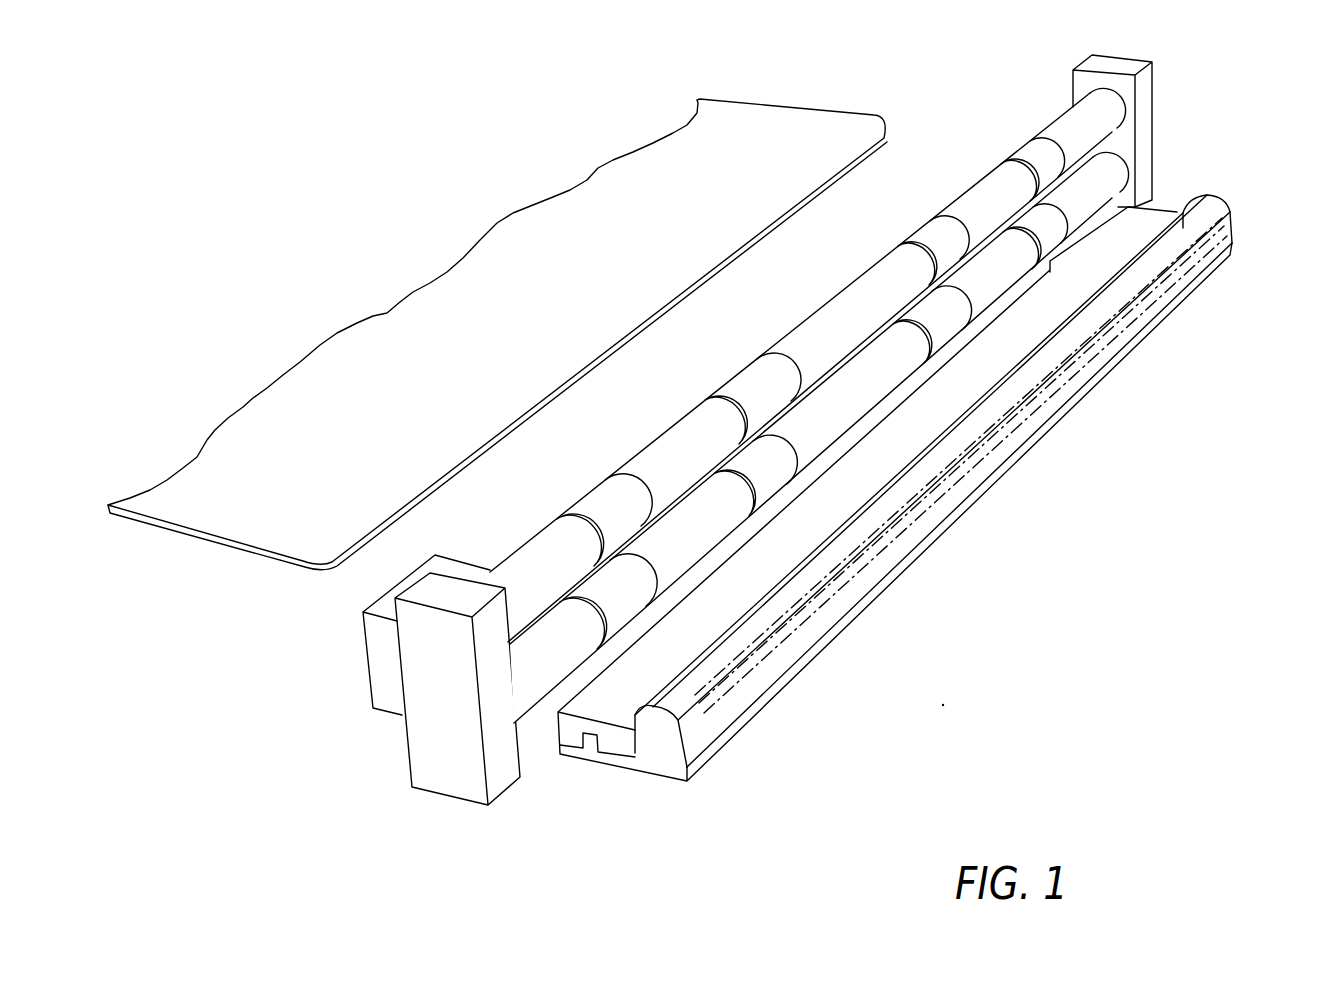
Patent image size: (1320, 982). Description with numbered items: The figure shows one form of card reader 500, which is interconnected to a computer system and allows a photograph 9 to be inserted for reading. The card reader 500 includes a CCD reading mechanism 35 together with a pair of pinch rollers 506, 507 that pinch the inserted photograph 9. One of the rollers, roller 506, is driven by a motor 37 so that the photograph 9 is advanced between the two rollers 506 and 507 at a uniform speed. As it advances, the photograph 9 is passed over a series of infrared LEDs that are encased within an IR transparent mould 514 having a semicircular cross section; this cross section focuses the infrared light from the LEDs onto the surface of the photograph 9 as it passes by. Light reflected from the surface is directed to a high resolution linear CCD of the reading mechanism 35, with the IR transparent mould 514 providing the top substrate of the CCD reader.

The photograph 9 is at (238, 547).
The CCD reading mechanism 35 is at (1225, 135).
The motor 37 is at (363, 660).
The card reader 500 is at (895, 536).
The pinch roller 506 is at (535, 702).
The pinch roller 507 is at (648, 444).
The IR transparent mould 514 is at (668, 752).